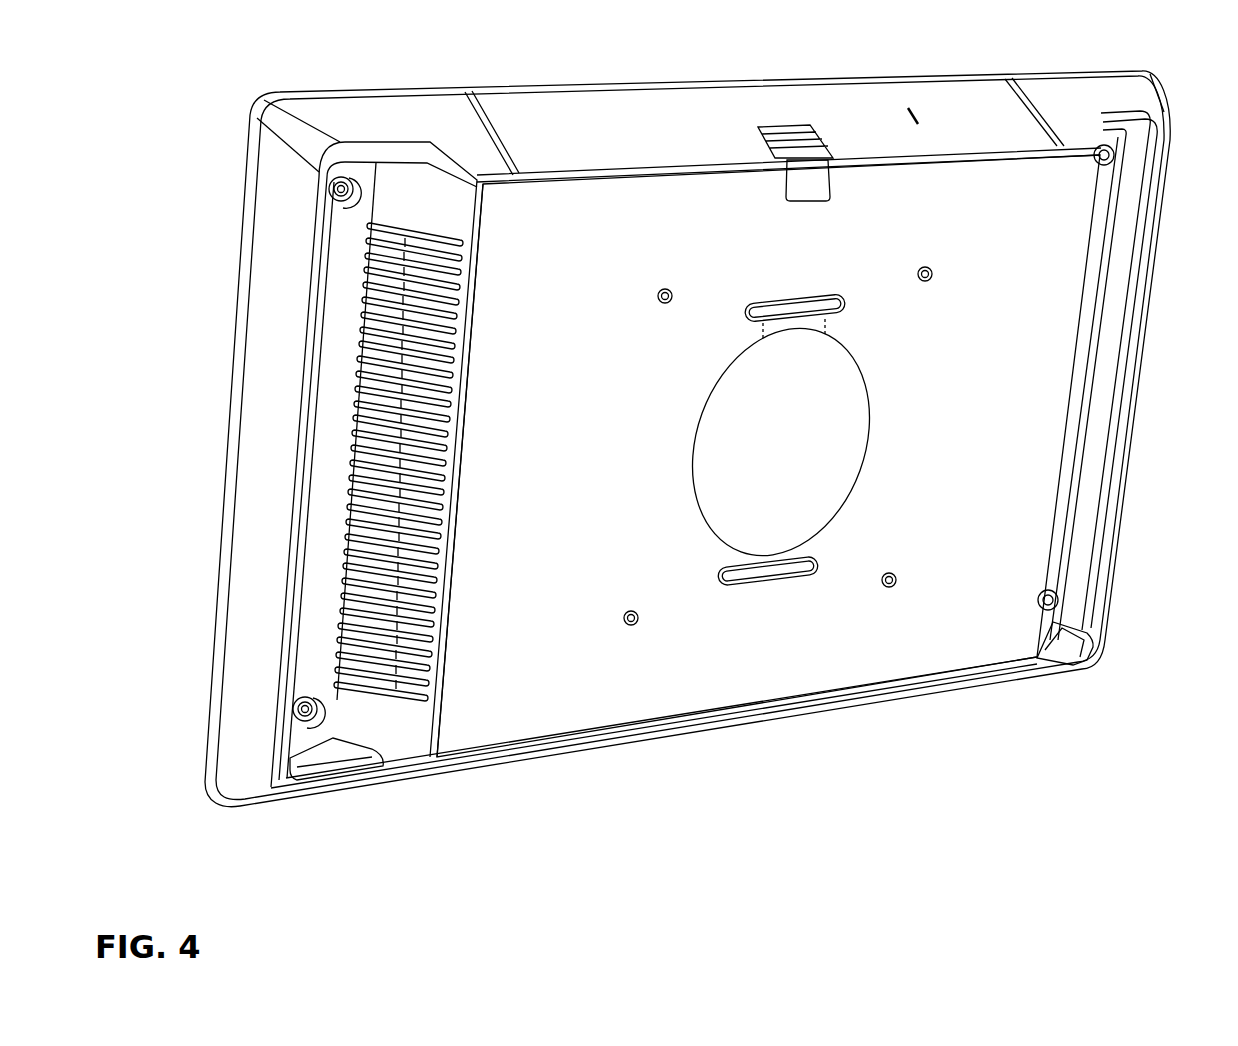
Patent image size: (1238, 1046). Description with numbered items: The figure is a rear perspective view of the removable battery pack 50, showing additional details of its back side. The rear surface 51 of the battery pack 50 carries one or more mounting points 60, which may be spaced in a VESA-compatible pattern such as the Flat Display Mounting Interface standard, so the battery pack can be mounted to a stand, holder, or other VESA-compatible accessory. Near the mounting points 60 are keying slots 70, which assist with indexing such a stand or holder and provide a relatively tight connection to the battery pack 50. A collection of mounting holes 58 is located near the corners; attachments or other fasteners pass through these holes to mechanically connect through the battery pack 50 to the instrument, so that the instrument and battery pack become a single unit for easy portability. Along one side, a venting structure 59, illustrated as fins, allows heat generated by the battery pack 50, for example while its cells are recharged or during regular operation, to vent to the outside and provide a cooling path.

The removable battery pack 50 is at (687, 439).
The rear surface 51 is at (529, 236).
The mounting holes 58 is at (336, 190).
The venting structure 59 is at (427, 342).
The mounting points 60 is at (670, 292).
The keying slots 70 is at (808, 310).